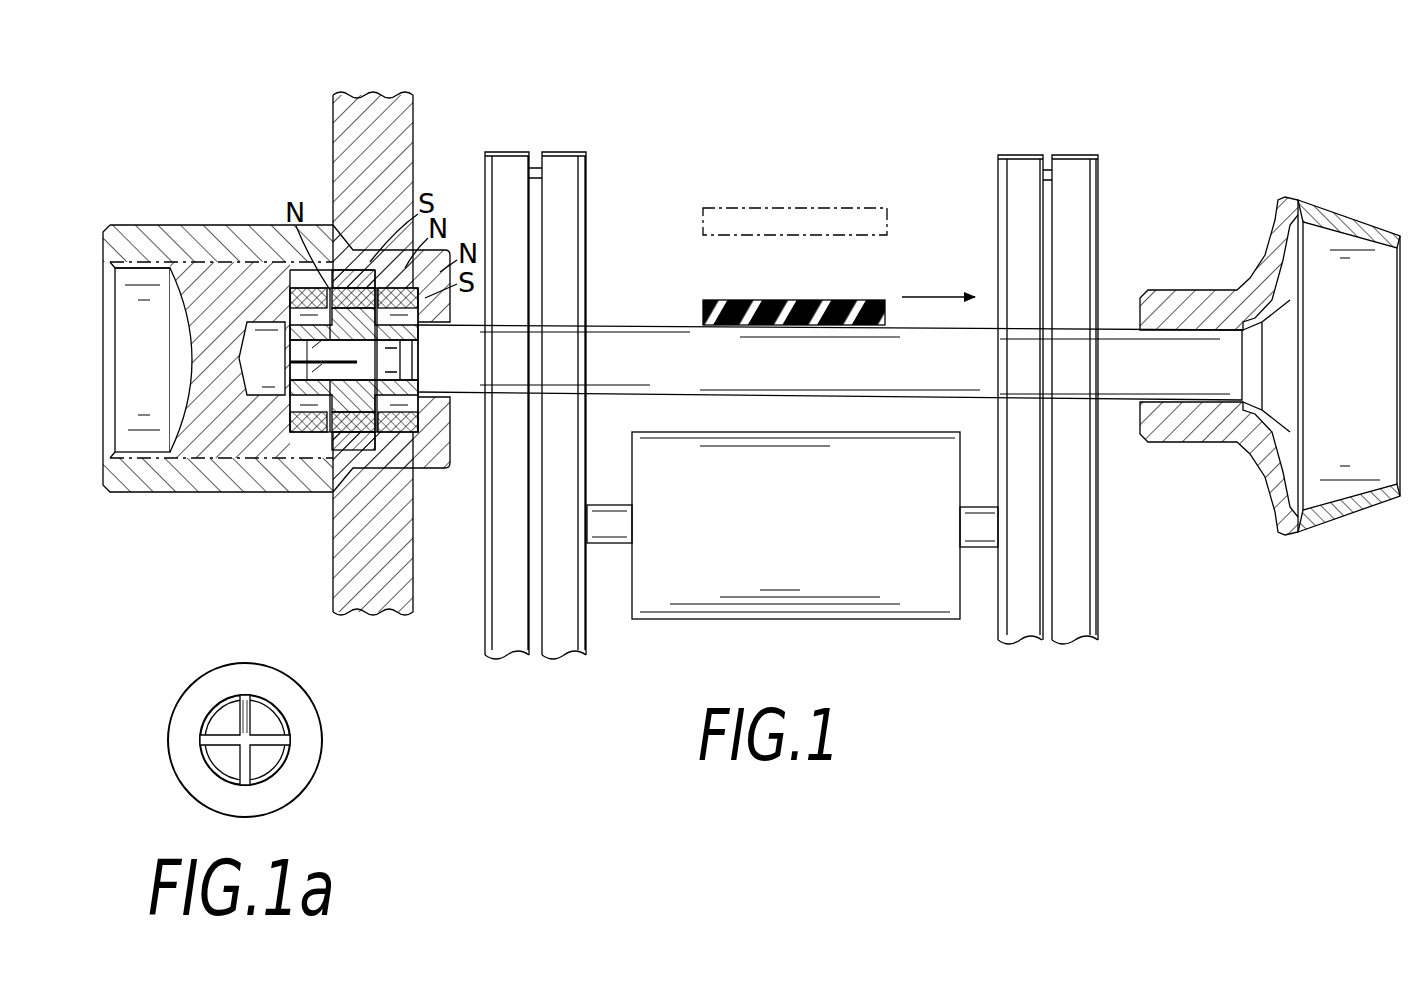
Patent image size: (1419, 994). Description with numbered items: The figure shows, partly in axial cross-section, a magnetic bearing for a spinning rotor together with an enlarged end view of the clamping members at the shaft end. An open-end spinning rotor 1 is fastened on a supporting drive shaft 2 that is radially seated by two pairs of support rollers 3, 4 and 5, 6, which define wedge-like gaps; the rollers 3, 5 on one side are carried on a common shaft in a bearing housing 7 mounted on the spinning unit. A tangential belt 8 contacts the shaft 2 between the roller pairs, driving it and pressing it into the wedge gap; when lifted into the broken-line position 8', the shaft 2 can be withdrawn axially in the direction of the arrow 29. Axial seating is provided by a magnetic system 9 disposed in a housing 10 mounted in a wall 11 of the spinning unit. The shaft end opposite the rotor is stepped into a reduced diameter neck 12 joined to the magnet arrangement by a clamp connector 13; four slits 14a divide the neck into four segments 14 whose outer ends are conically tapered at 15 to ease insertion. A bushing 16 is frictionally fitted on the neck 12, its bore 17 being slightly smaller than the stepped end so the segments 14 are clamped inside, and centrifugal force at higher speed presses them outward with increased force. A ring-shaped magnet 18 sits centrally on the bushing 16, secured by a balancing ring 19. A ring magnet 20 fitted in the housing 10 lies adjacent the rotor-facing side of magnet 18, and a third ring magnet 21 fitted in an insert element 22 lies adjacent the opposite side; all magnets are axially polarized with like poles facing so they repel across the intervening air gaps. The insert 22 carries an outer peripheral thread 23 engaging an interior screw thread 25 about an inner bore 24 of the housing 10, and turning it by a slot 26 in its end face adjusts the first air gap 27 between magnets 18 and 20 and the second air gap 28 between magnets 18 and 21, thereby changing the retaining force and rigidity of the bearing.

In FIG. 1, the open-end spinning rotor 1 is at (1343, 222).
In FIG. 1, the supporting drive shaft 2 is at (617, 340).
In FIG. 1a, the supporting drive shaft 2 is at (323, 731).
In FIG. 1, the support roller 3 is at (1045, 640).
In FIG. 1, the support roller 4 is at (1075, 399).
In FIG. 1, the support roller 5 is at (532, 658).
In FIG. 1, the support roller 6 is at (564, 405).
In FIG. 1, the bearing housing 7 is at (817, 595).
In FIG. 1, the tangential belt 8 is at (794, 291).
In FIG. 1, the lifted belt position 8' is at (813, 199).
In FIG. 1, the magnetic system 9 is at (278, 138).
In FIG. 1, the housing 10 is at (290, 385).
In FIG. 1, the wall 11 is at (403, 583).
In FIG. 1, the reduced diameter neck 12 is at (354, 366).
In FIG. 1a, the reduced diameter neck 12 is at (287, 703).
In FIG. 1, the clamp connector 13 is at (355, 372).
In FIG. 1a, the clamp connector 13 is at (158, 740).
In FIG. 1, the segments 14 is at (292, 413).
In FIG. 1a, the segments 14 is at (228, 760).
In FIG. 1, the slits 14a is at (312, 400).
In FIG. 1a, the slits 14a is at (248, 695).
In FIG. 1, the conical taper 15 is at (300, 358).
In FIG. 1a, the conical taper 15 is at (268, 777).
In FIG. 1, the bushing 16 is at (320, 405).
In FIG. 1, the bore 17 is at (403, 344).
In FIG. 1, the ring-shaped magnet 18 is at (333, 403).
In FIG. 1, the balancing ring 19 is at (385, 470).
In FIG. 1, the ring magnet 20 is at (420, 422).
In FIG. 1, the third ring magnet 21 is at (287, 272).
In FIG. 1, the insert element 22 is at (206, 443).
In FIG. 1, the outer peripheral thread 23 is at (214, 260).
In FIG. 1, the inner bore 24 is at (145, 320).
In FIG. 1, the interior screw thread 25 is at (115, 272).
In FIG. 1, the slot 26 is at (185, 355).
In FIG. 1, the first air gap 27 is at (420, 472).
In FIG. 1, the second air gap 28 is at (345, 282).
In FIG. 1, the arrow 29 is at (928, 293).